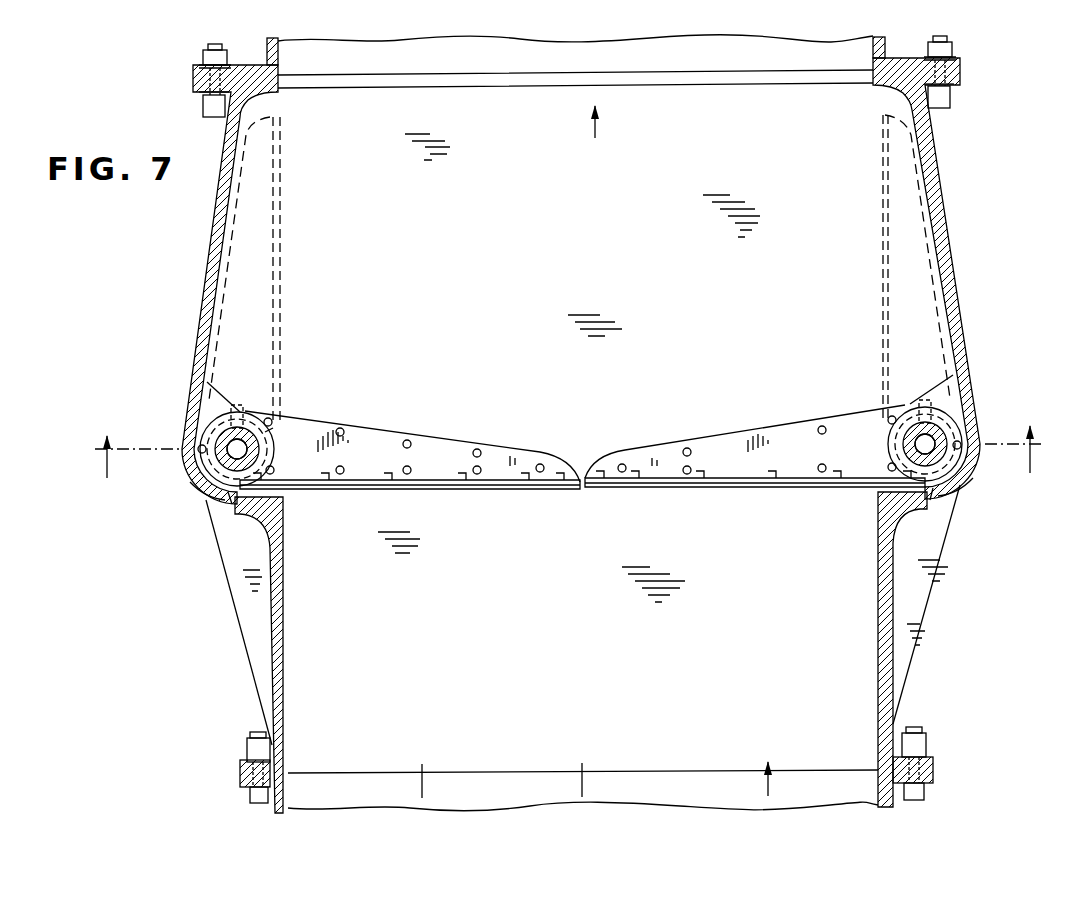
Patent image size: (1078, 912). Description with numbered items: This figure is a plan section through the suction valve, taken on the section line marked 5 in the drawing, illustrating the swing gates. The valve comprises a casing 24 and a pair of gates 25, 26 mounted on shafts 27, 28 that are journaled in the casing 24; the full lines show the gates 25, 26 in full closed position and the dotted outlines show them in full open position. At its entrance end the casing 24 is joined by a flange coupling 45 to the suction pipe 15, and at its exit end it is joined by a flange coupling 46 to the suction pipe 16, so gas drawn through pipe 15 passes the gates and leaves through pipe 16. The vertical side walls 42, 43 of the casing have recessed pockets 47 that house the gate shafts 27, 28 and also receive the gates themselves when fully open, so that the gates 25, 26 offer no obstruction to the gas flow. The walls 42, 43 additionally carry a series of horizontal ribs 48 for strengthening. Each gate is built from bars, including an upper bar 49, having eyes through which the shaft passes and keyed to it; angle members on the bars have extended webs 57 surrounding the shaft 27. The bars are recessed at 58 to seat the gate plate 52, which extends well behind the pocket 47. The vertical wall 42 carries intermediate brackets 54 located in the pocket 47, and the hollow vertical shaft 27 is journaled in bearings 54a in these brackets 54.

The suction pipe 15 is at (298, 805).
The suction pipe 16 is at (867, 52).
The casing 24 is at (949, 594).
The gate 25 is at (394, 299).
The gate 26 is at (878, 237).
The shaft 27 is at (222, 458).
The shaft 28 is at (940, 455).
The vertical side wall 42 is at (210, 223).
The vertical side wall 43 is at (960, 266).
The flange coupling 45 is at (932, 760).
The flange coupling 46 is at (962, 63).
The recessed pocket 47 is at (200, 498).
The horizontal rib 48 is at (250, 606).
The upper bar 49 is at (378, 440).
The gate plate 52 is at (472, 488).
The intermediate bracket 54 is at (215, 403).
The bearing 54a is at (273, 430).
The extended web 57 is at (213, 425).
The recess 58 is at (228, 494).
The section line 5- 5 is at (570, 466).